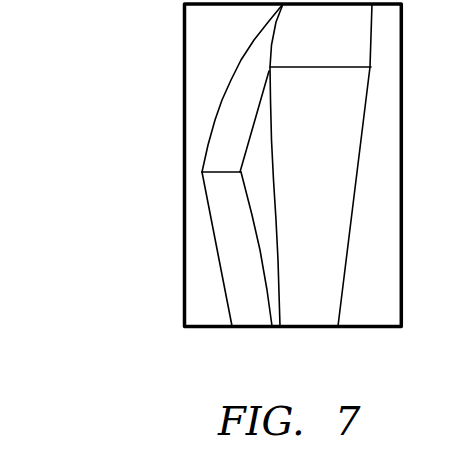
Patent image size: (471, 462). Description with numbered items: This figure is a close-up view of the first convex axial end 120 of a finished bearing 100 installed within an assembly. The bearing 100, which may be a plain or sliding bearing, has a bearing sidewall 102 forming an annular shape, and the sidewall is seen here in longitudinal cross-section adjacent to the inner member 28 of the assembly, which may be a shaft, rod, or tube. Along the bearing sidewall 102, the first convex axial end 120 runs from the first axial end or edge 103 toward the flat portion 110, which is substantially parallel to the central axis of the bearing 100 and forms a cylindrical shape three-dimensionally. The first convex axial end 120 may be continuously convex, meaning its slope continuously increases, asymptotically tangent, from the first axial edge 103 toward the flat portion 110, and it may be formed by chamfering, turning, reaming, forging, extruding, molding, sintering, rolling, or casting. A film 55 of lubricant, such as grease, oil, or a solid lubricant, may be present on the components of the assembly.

The bearing 100 is at (143, 37).
The inner member 28 is at (288, 40).
The film 55 is at (265, 85).
The first convex axial end 120 is at (215, 127).
The first axial end or edge 103 is at (203, 172).
The bearing sidewall 102 is at (219, 249).
The flat portion 110 is at (228, 303).